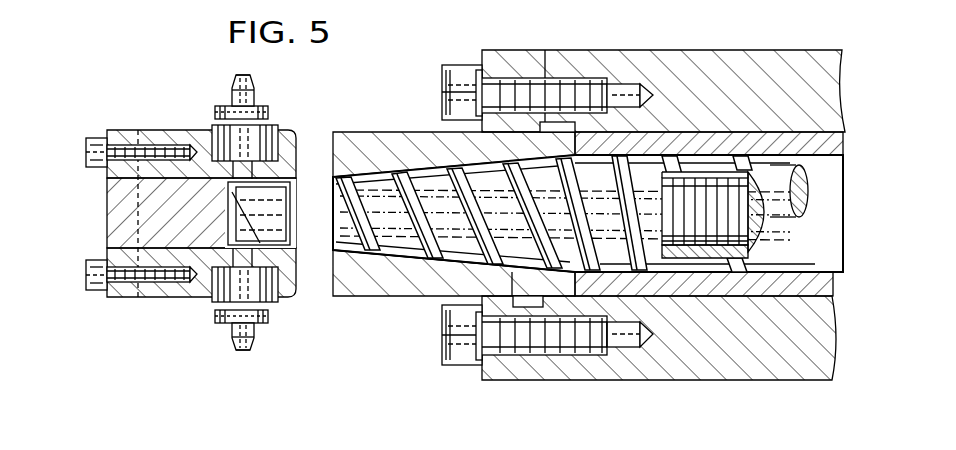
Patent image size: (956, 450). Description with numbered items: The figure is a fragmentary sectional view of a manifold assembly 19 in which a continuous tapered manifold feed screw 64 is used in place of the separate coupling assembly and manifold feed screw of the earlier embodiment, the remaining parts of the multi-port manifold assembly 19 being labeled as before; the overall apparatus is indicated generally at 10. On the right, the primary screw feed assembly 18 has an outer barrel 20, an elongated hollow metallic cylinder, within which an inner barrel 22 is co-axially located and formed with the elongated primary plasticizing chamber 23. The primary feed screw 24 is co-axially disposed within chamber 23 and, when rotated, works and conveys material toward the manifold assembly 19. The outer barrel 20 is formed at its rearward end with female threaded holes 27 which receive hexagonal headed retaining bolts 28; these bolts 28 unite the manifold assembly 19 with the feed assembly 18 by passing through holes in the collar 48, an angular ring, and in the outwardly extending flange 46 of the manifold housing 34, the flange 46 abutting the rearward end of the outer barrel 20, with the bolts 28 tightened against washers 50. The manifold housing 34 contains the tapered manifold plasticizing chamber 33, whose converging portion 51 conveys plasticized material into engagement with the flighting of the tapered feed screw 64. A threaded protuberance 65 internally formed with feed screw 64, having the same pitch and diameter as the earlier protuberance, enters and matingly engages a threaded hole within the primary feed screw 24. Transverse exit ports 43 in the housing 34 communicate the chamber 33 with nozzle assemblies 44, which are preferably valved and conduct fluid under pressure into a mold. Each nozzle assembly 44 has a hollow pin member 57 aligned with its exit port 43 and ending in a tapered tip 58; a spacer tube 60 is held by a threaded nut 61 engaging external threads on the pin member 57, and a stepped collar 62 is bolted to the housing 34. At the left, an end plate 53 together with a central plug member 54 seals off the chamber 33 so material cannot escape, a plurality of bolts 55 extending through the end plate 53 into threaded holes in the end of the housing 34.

The fastening assembly 10 is at (383, 403).
The primary screw feed assembly 18 is at (786, 50).
The manifold assembly 19 is at (100, 117).
The outer barrel 20 is at (745, 370).
The inner barrel 22 is at (765, 290).
The primary plasticizing chamber 23 is at (822, 279).
The primary feed screw 24 is at (797, 230).
The threaded holes 27 is at (605, 358).
The retaining bolts 28 is at (450, 88).
The manifold plasticizing chamber 33 is at (368, 178).
The manifold housing 34 is at (373, 290).
The exit ports 43 is at (246, 160).
The nozzle assembly 44 is at (270, 90).
The flange 46 is at (527, 128).
The collar 48 is at (505, 58).
The washers 50 is at (480, 66).
The converging portion 51 is at (460, 262).
The end plate 53 is at (122, 284).
The central plug member 54 is at (172, 213).
The bolts 55 is at (87, 165).
The hollow pin member 57 is at (231, 98).
The tapered tip 58 is at (238, 86).
The spacer tube 60 is at (270, 117).
The threaded nut 61 is at (215, 110).
The stepped collar 62 is at (270, 147).
The continuous tapered manifold feed screw 64 is at (435, 195).
The threaded protuberance 65 is at (715, 197).